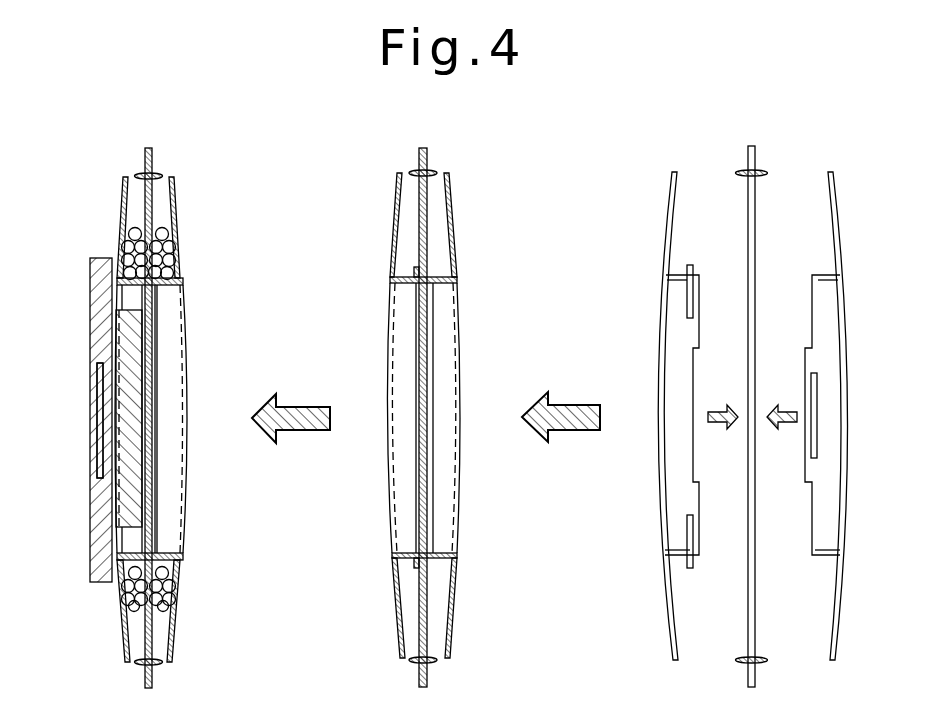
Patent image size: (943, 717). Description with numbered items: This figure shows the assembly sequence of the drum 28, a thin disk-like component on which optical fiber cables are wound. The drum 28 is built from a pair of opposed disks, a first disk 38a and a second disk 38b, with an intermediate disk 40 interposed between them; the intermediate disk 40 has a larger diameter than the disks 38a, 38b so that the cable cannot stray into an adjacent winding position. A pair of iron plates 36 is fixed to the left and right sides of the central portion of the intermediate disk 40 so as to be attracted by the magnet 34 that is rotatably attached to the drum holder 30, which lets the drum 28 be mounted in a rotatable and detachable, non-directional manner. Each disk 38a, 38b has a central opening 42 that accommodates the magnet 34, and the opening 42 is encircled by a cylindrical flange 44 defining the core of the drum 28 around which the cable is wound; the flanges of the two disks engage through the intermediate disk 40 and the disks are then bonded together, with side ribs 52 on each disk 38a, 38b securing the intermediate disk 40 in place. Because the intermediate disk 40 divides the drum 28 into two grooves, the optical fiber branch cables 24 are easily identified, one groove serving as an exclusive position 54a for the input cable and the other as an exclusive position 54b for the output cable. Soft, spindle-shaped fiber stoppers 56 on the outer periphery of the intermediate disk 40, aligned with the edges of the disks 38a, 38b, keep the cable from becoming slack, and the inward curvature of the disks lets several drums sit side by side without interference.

The optical fiber branch cable 24 is at (168, 248).
The drum 28 is at (182, 620).
The drum holder 30 is at (105, 257).
The magnet 34 is at (130, 510).
The iron plate 36 is at (408, 488).
The first disk 38a is at (393, 600).
The second disk 38b is at (458, 603).
The intermediate disk 40 is at (430, 628).
The opening 42 is at (445, 337).
The cylindrical flange 44 is at (680, 272).
The side rib 52 is at (690, 263).
The exclusive position for input optical fiber cable 54a is at (135, 222).
The exclusive position for output optical fiber cable 54b is at (163, 222).
The fiber stopper 56 is at (430, 175).